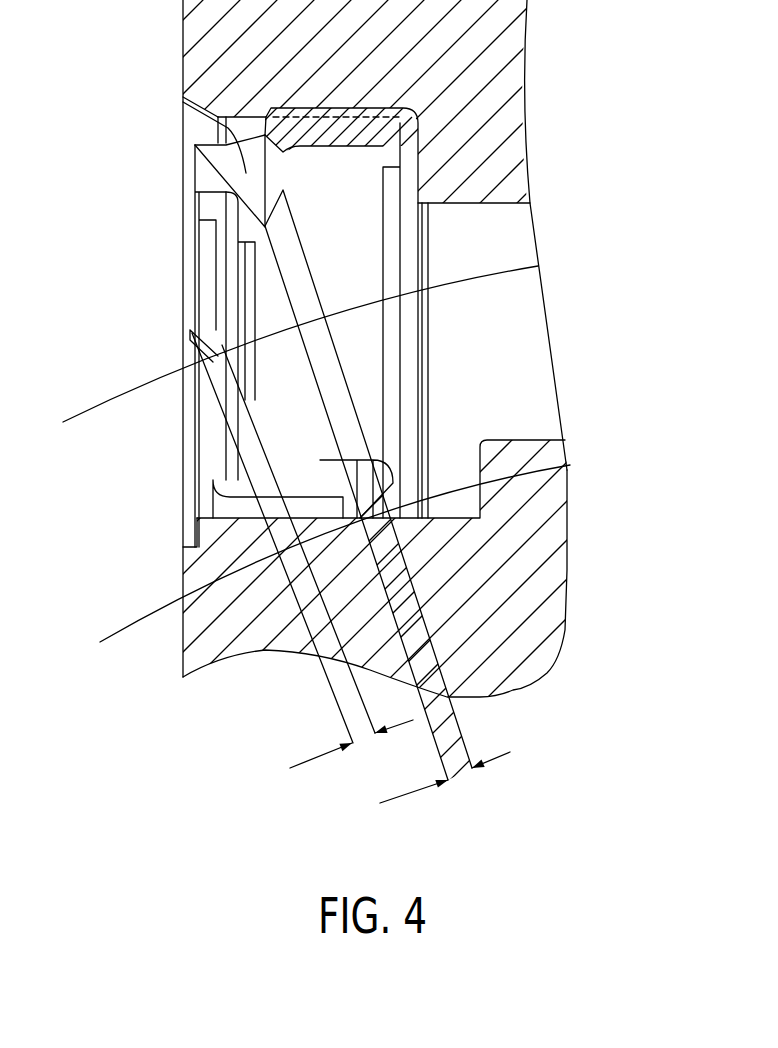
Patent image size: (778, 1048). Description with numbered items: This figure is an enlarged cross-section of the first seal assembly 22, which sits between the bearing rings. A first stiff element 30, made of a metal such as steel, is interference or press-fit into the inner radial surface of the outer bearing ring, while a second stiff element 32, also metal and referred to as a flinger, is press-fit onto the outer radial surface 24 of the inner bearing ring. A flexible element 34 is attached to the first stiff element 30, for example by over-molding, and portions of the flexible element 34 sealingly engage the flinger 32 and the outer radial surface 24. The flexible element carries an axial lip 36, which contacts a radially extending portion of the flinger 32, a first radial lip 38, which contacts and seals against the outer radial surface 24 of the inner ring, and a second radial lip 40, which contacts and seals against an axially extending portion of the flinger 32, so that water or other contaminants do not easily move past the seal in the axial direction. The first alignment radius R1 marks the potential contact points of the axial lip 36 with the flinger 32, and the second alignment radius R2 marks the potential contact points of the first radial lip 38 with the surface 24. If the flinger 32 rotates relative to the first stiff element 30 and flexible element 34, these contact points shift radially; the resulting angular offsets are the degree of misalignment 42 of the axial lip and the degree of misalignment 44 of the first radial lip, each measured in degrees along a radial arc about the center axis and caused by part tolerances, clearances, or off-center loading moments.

The first seal assembly 22 is at (427, 424).
The outer radial surface 24 is at (453, 513).
The first stiff element 30 is at (377, 158).
The second stiff element 32 is at (205, 428).
The flexible element 34 is at (205, 118).
The axial lip 36 is at (257, 378).
The first radial lip 38 is at (392, 495).
The second radial lip 40 is at (265, 494).
The degree of misalignment of the axial lip 42 is at (368, 742).
The degree of misalignment of the first radial lip 44 is at (457, 775).
The first alignment radius R1 is at (113, 395).
The second alignment radius R2 is at (124, 626).